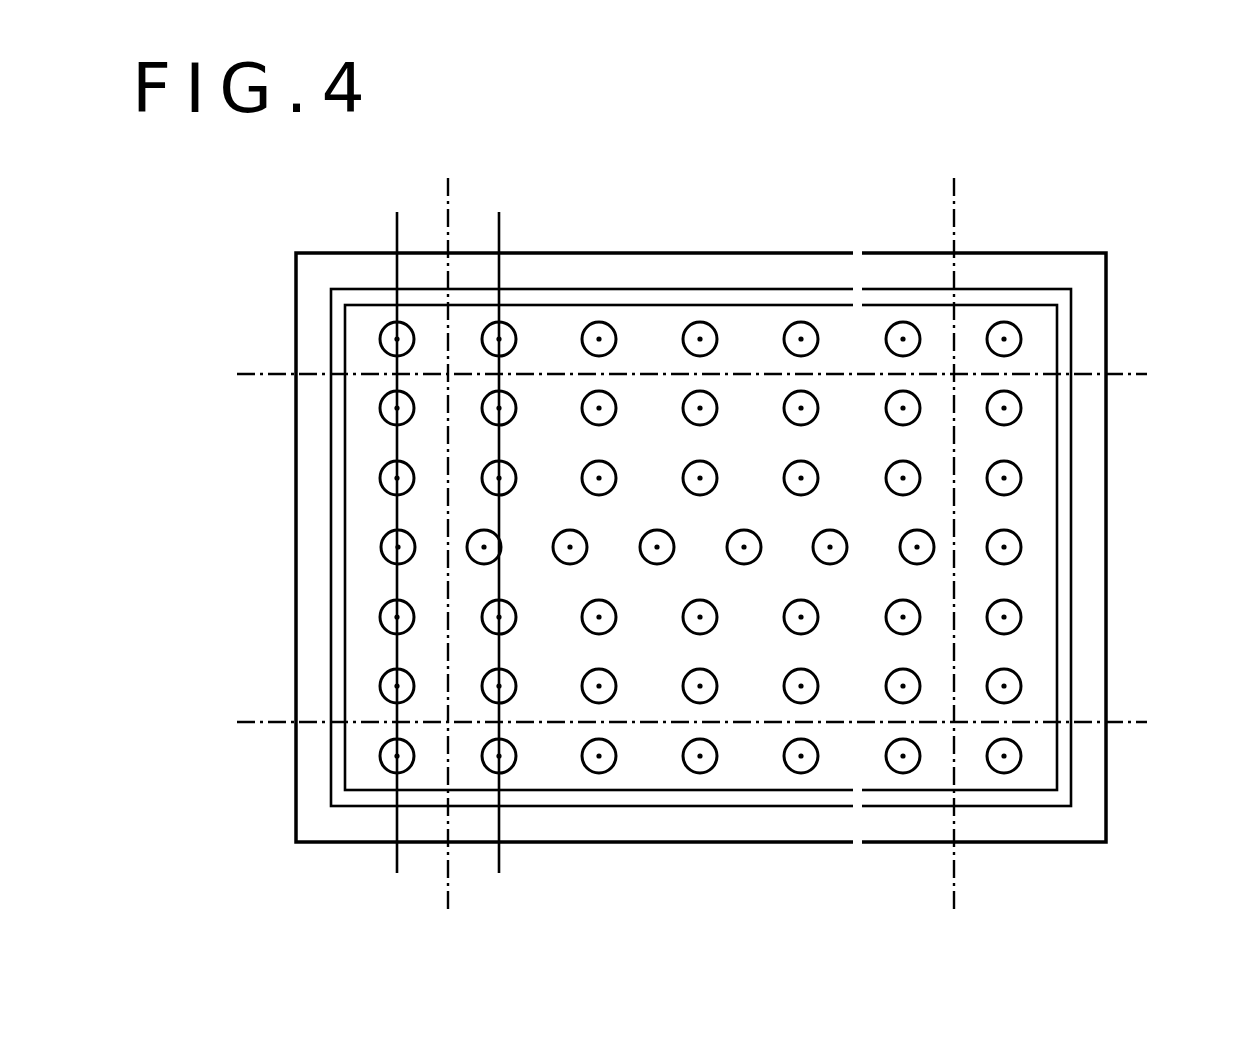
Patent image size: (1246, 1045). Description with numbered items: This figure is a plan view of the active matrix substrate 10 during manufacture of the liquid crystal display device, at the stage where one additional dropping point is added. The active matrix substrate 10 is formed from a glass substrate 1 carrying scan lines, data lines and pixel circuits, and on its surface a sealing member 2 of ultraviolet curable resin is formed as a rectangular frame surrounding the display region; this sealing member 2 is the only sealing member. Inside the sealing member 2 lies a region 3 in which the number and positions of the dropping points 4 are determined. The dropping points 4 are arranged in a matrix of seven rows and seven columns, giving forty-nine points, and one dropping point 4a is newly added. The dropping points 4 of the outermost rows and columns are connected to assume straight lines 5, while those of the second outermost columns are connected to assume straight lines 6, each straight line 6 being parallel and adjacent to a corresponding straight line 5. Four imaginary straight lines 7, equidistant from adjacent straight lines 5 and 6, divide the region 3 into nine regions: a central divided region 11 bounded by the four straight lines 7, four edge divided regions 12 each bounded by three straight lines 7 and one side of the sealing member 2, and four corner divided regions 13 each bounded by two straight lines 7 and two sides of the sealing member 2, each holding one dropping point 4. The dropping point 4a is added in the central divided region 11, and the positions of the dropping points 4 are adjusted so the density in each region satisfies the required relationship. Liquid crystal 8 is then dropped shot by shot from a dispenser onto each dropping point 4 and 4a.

The glass substrate 1 is at (1085, 408).
The sealing member 2 is at (1068, 462).
The region 3 is at (1035, 522).
The dropping point 4 is at (499, 339).
The dropping point 4a is at (744, 547).
The straight line 5 is at (396, 228).
The straight line 6 is at (500, 222).
The straight line 7 is at (450, 192).
The liquid crystal 8 is at (600, 760).
The active matrix substrate 10 is at (975, 143).
The central divided region 11 is at (943, 660).
The edge divided region 12 is at (566, 325).
The corner divided region 13 is at (380, 348).